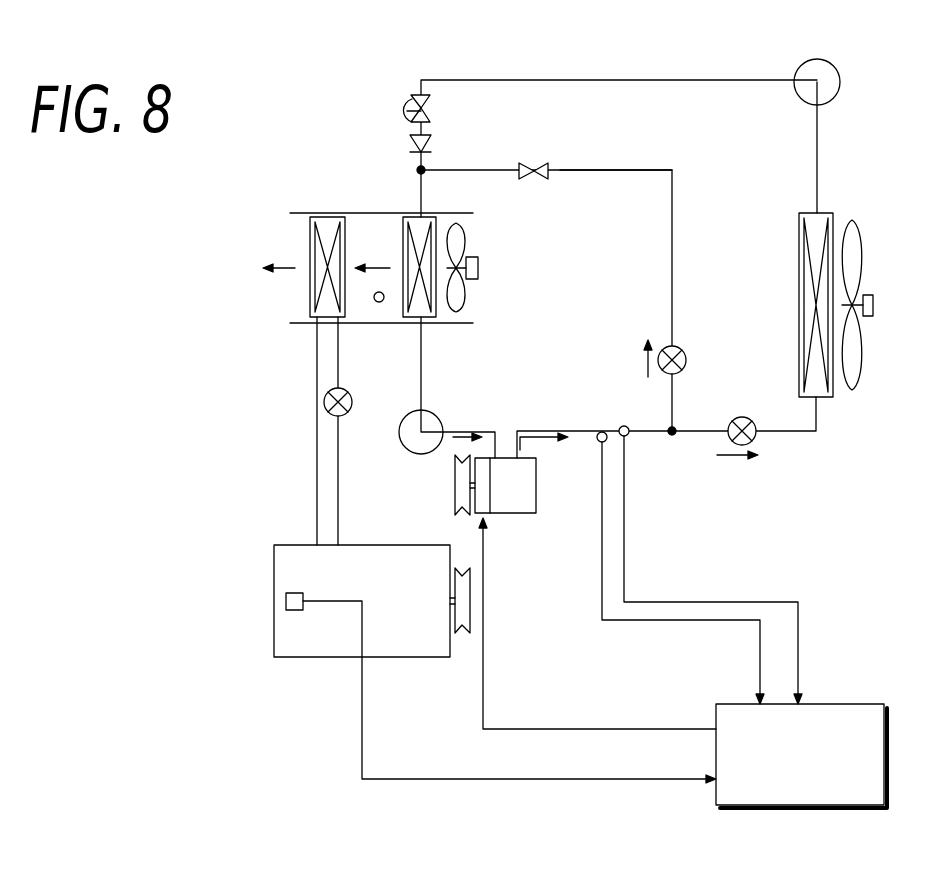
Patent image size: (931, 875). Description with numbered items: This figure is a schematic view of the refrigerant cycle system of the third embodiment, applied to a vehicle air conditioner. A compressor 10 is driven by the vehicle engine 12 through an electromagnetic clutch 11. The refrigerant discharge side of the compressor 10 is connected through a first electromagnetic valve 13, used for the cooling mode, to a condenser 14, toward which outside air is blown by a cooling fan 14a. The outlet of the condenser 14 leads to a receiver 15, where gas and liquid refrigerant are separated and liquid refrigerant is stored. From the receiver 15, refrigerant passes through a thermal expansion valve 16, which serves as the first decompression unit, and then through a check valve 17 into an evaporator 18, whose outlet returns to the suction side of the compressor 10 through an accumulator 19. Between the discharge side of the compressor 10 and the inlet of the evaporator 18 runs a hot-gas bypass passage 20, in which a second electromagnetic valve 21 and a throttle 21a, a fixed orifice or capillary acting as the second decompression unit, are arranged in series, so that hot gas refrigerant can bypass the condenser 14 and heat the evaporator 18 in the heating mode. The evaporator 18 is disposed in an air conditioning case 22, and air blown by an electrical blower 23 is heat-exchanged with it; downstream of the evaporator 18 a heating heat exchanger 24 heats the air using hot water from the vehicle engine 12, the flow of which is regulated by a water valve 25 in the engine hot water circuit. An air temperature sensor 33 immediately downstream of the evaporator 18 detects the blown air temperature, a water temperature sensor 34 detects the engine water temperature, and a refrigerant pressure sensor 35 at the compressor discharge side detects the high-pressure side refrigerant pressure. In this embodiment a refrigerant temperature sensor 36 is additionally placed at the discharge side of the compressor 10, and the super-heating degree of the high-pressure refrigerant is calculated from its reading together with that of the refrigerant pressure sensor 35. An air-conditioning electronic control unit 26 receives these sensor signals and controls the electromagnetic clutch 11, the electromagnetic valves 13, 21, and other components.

The compressor 10 is at (526, 487).
The electromagnetic clutch 11 is at (485, 490).
The vehicle engine 12 is at (337, 640).
The first electromagnetic valve 13 is at (742, 417).
The condenser 14 is at (822, 387).
The cooling fan 14a is at (852, 222).
The receiver 15 is at (822, 62).
The thermal expansion valve 16 is at (412, 99).
The check valve 17 is at (410, 146).
The evaporator 18 is at (413, 228).
The accumulator 19 is at (433, 417).
The hot-gas bypass passage 20 is at (617, 170).
The second electromagnetic valve 21 is at (686, 355).
The throttle 21a is at (535, 163).
The air conditioning case 22 is at (326, 211).
The electrical blower 23 is at (466, 245).
The heating heat exchanger 24 is at (311, 295).
The water valve 25 is at (324, 402).
The air-conditioning electronic control unit 26 is at (848, 703).
The air temperature sensor 33 is at (381, 302).
The water temperature sensor 34 is at (293, 610).
The refrigerant pressure sensor 35 is at (622, 426).
The refrigerant temperature sensor 36 is at (596, 436).